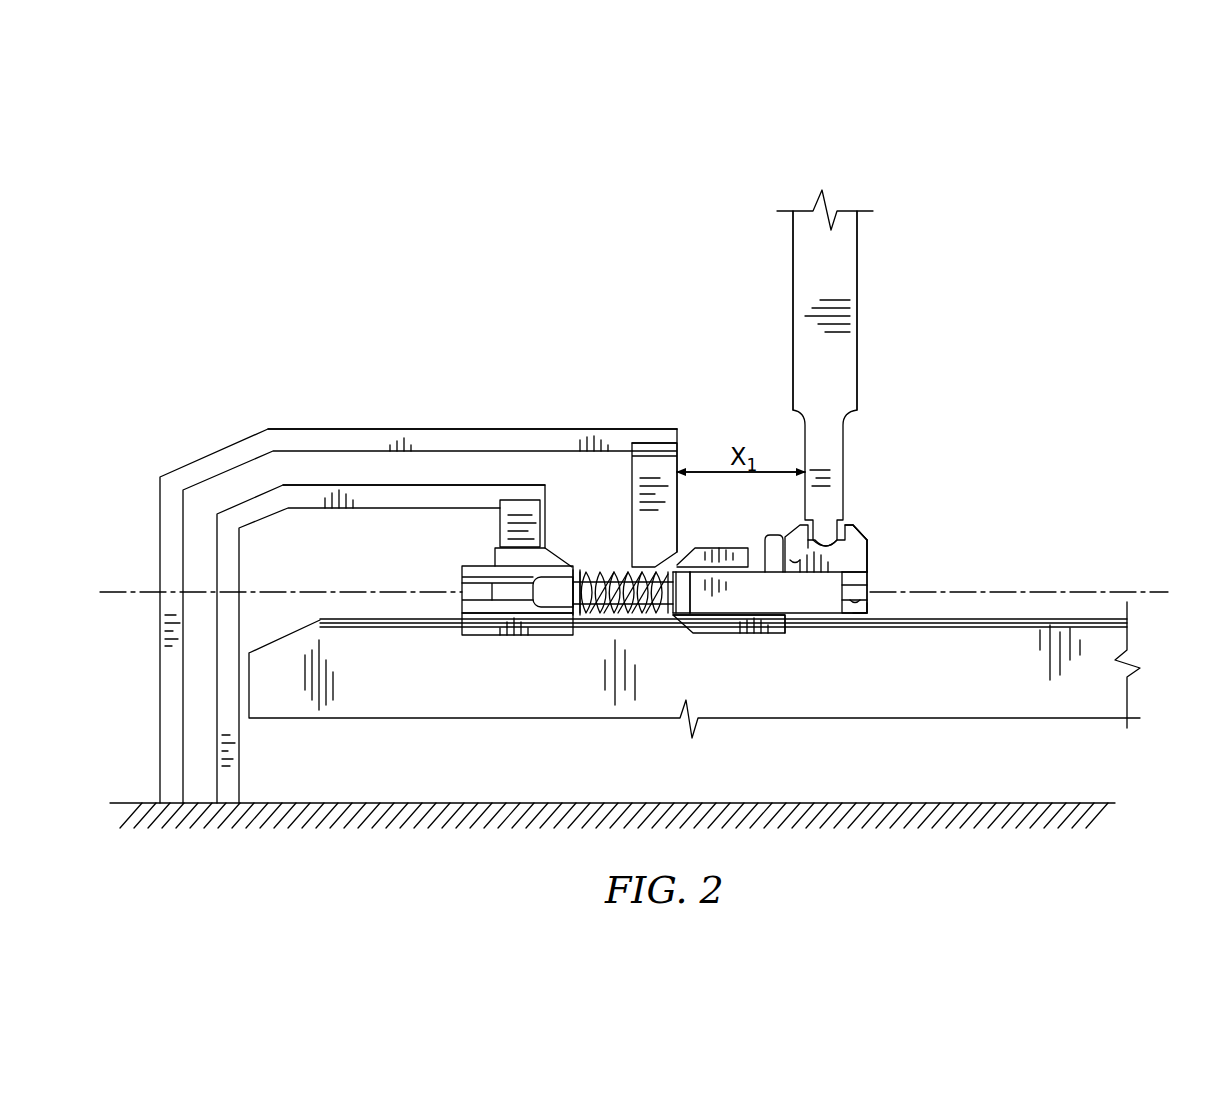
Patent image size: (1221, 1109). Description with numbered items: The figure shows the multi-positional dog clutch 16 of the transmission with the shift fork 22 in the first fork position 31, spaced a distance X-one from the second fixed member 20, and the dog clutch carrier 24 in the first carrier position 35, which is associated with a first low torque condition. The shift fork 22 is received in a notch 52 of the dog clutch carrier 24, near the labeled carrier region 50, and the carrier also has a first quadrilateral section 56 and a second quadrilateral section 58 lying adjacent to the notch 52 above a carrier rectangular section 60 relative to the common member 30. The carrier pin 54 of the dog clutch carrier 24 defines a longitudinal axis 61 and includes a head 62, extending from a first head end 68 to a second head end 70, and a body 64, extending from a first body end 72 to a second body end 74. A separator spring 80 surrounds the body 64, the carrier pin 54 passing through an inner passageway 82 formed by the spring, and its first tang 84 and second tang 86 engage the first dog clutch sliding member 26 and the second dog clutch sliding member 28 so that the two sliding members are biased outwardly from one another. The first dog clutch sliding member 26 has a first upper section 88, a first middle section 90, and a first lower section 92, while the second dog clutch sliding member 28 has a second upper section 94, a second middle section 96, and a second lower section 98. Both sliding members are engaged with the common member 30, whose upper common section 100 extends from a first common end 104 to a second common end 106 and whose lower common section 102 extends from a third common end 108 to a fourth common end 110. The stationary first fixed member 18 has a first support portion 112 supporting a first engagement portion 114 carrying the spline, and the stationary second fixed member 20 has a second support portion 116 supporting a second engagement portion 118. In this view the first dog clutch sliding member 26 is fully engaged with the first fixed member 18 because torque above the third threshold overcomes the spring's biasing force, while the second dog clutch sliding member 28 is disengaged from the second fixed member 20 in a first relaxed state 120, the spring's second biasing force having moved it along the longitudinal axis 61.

The multi-positional dog clutch 16 is at (921, 275).
The first fixed member 18 is at (533, 478).
The second fixed member 20 is at (663, 420).
The shift fork 22 is at (838, 193).
The dog clutch carrier 24 is at (888, 500).
The first dog clutch sliding member 26 is at (465, 633).
The second dog clutch sliding member 28 is at (775, 630).
The common member 30 is at (1100, 708).
The first fork position 31 is at (757, 255).
The first carrier position 35 is at (870, 548).
The cap recess 50 is at (853, 540).
The notch 52 is at (800, 560).
The carrier pin 54 is at (870, 598).
The first quadrilateral section 56 is at (795, 550).
The second quadrilateral section 58 is at (878, 535).
The carrier rectangular section 60 is at (808, 548).
The longitudinal axis 61 is at (1078, 590).
The head 62 is at (865, 587).
The body 64 is at (685, 605).
The first head end 68 is at (850, 605).
The second head end 70 is at (856, 618).
The first body end 72 is at (867, 568).
The second body end 74 is at (553, 605).
The separator spring 80 is at (600, 563).
The inner passageway 82 is at (600, 612).
The first tang 84 is at (575, 603).
The second tang 86 is at (672, 572).
The first upper section 88 is at (505, 557).
The first middle section 90 is at (470, 585).
The first lower section 92 is at (483, 628).
The second upper section 94 is at (707, 548).
The second middle section 96 is at (742, 600).
The second lower section 98 is at (715, 625).
The upper common section 100 is at (1130, 650).
The lower common section 102 is at (282, 717).
The first common end 104 is at (1130, 622).
The second common end 106 is at (249, 653).
The third common end 108 is at (249, 658).
The fourth common end 110 is at (249, 717).
The first support portion 112 is at (233, 570).
The first engagement portion 114 is at (510, 525).
The second support portion 116 is at (170, 515).
The second engagement portion 118 is at (657, 470).
The first relaxed state 120 is at (560, 395).